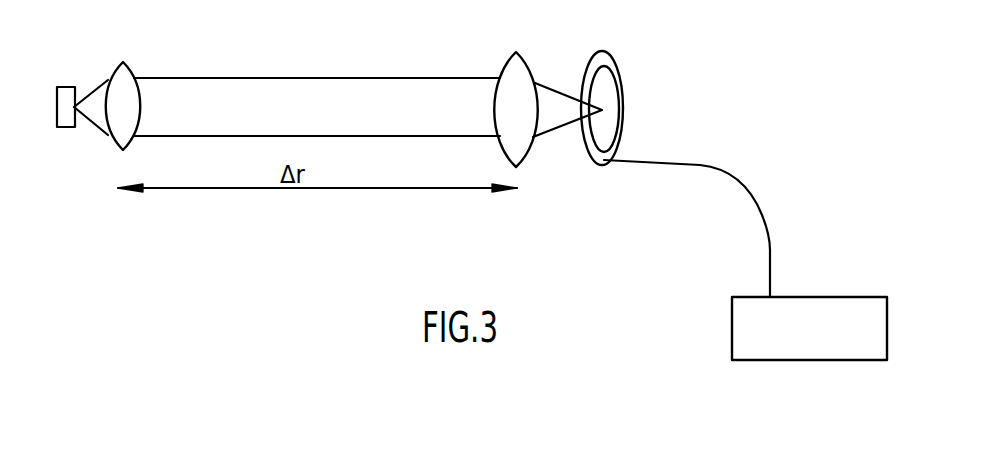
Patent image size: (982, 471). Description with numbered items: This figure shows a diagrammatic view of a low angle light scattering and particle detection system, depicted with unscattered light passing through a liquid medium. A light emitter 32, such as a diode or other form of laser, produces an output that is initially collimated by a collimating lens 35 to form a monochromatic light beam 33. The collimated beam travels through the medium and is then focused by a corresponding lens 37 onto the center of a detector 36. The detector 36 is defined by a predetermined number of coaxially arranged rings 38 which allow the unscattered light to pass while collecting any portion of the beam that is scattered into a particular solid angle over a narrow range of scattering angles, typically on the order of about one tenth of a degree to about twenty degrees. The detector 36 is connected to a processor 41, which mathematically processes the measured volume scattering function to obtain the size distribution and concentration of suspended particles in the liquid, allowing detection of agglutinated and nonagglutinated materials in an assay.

The light emitter 32 is at (66, 128).
The collimating lens 35 is at (121, 62).
The lens 37 is at (508, 62).
The monochromatic light beam 33 is at (542, 84).
The detector 36 is at (647, 127).
The detector rings 38 is at (604, 164).
The processor 41 is at (788, 354).